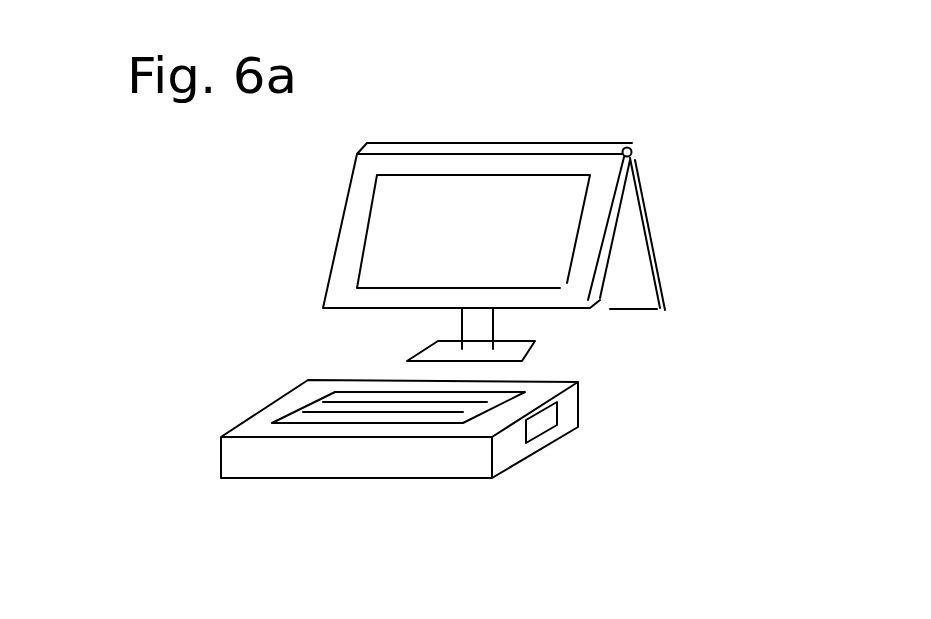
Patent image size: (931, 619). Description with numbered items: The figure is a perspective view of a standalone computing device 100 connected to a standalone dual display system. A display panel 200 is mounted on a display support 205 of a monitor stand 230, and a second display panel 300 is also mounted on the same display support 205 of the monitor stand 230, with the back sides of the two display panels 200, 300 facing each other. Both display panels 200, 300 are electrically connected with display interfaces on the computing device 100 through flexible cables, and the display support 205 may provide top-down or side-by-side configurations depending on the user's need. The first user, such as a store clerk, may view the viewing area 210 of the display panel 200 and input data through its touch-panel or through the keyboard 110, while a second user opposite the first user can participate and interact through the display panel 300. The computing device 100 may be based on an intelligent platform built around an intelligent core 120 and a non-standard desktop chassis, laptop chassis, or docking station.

The standalone computing device 100 is at (260, 475).
The keyboard 110 is at (292, 412).
The intelligent core 120 is at (542, 422).
The display panel 200 is at (408, 143).
The display support 205 is at (632, 143).
The viewing area 210 is at (387, 235).
The monitor stand 230 is at (523, 360).
The display panel 300 is at (652, 223).